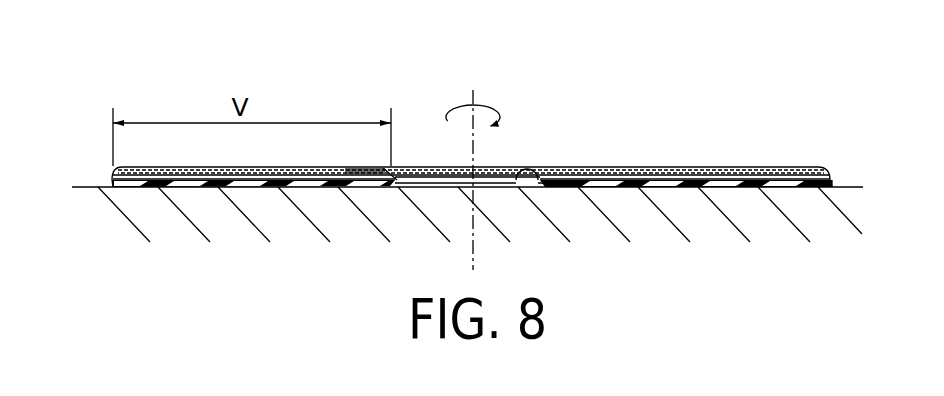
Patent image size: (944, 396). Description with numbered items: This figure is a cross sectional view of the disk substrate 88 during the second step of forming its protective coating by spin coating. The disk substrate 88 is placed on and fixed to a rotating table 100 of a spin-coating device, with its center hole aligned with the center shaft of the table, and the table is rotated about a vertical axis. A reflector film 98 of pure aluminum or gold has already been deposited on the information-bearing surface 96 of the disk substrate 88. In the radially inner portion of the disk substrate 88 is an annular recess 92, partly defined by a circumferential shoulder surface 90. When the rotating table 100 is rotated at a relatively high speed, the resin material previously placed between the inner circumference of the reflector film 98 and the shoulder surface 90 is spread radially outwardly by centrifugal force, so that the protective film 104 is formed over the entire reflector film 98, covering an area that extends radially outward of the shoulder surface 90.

The disk substrate 88 is at (697, 183).
The circumferential shoulder surface 90 is at (405, 172).
The annular recess 92 is at (516, 186).
The information-bearing surface 96 is at (595, 167).
The reflector film 98 is at (727, 167).
The rotating table 100 is at (347, 218).
The protective film 104 is at (352, 167).